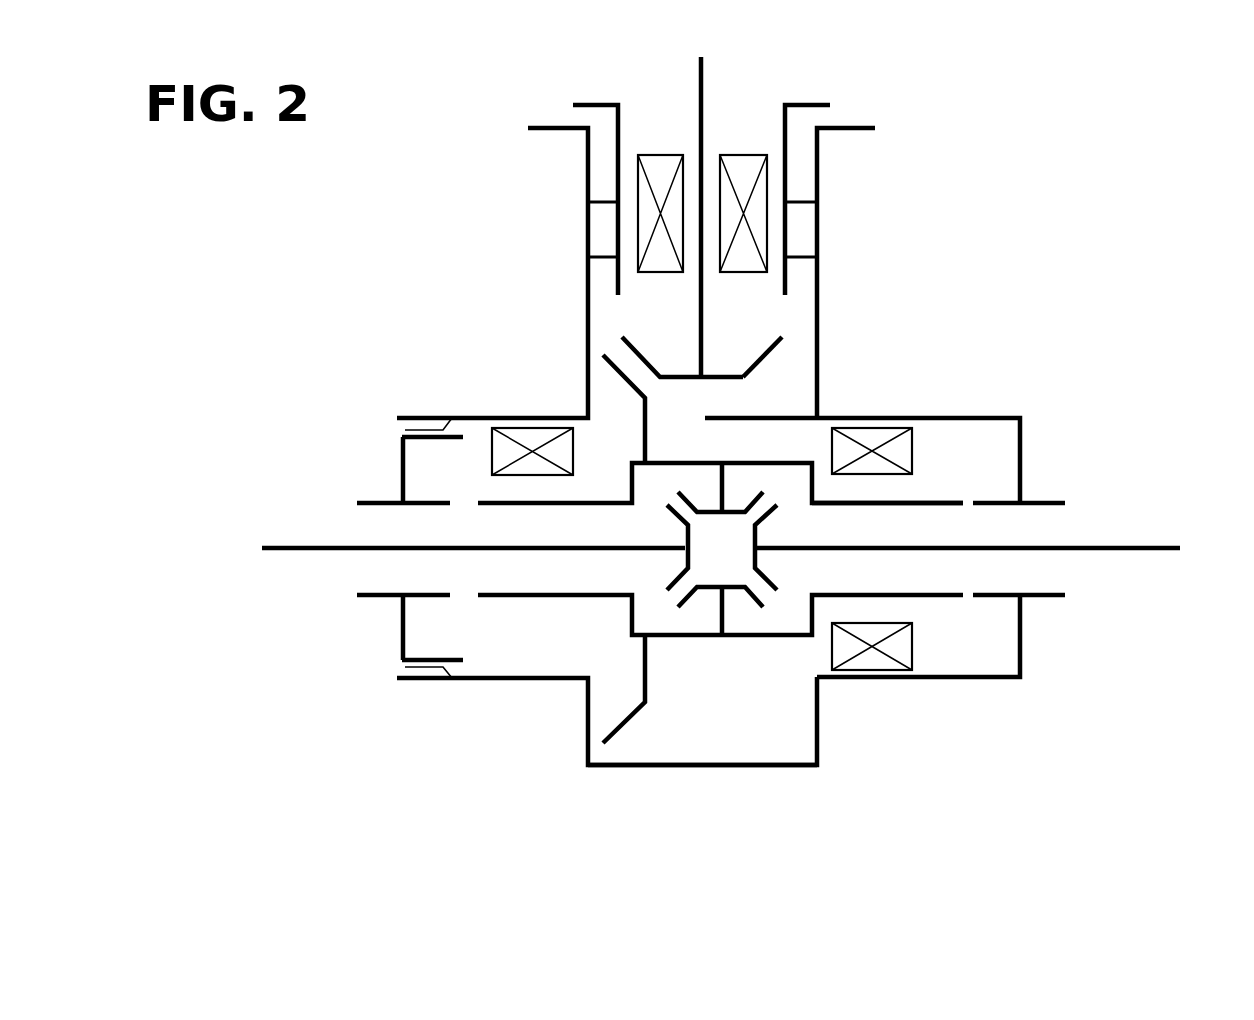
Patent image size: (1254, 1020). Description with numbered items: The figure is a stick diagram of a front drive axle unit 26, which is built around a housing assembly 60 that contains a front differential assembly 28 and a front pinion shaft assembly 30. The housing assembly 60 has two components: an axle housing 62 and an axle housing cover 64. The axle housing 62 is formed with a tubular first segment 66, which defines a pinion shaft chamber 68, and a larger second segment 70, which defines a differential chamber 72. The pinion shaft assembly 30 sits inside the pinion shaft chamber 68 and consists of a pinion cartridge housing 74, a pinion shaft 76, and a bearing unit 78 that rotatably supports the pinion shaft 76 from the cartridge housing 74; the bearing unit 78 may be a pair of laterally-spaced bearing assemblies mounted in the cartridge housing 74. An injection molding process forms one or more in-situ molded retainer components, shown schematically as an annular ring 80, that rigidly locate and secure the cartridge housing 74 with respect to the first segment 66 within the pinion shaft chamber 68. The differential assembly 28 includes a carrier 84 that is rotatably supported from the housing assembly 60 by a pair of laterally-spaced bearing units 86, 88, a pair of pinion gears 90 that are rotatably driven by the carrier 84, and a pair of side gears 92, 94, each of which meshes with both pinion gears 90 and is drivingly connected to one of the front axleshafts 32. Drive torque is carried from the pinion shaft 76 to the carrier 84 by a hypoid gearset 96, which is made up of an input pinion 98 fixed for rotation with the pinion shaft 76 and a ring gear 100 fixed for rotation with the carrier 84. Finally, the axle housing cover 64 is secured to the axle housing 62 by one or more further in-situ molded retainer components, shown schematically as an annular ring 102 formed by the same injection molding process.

The front drive axle unit 26 is at (1053, 258).
The front differential assembly 28 is at (831, 489).
The front pinion shaft assembly 30 is at (758, 108).
The front axleshafts 32 is at (330, 545).
The housing assembly 60 is at (819, 322).
The axle housing 62 is at (1005, 418).
The axle housing cover 64 is at (378, 598).
The tubular first segment 66 is at (586, 285).
The pinion shaft chamber 68 is at (782, 383).
The larger second segment 70 is at (792, 768).
The differential chamber 72 is at (750, 742).
The pinion cartridge housing 74 is at (815, 283).
The pinion shaft 76 is at (698, 89).
The bearing unit 78 is at (645, 185).
The annular ring 80 is at (602, 228).
The carrier 84 is at (787, 635).
The bearing unit 86 is at (526, 432).
The bearing unit 88 is at (912, 643).
The pinion gears 90 is at (755, 490).
The side gear 92 is at (685, 526).
The side gear 94 is at (758, 563).
The hypoid gearset 96 is at (632, 326).
The input pinion 98 is at (753, 360).
The ring gear 100 is at (629, 725).
The annular ring 102 is at (428, 672).